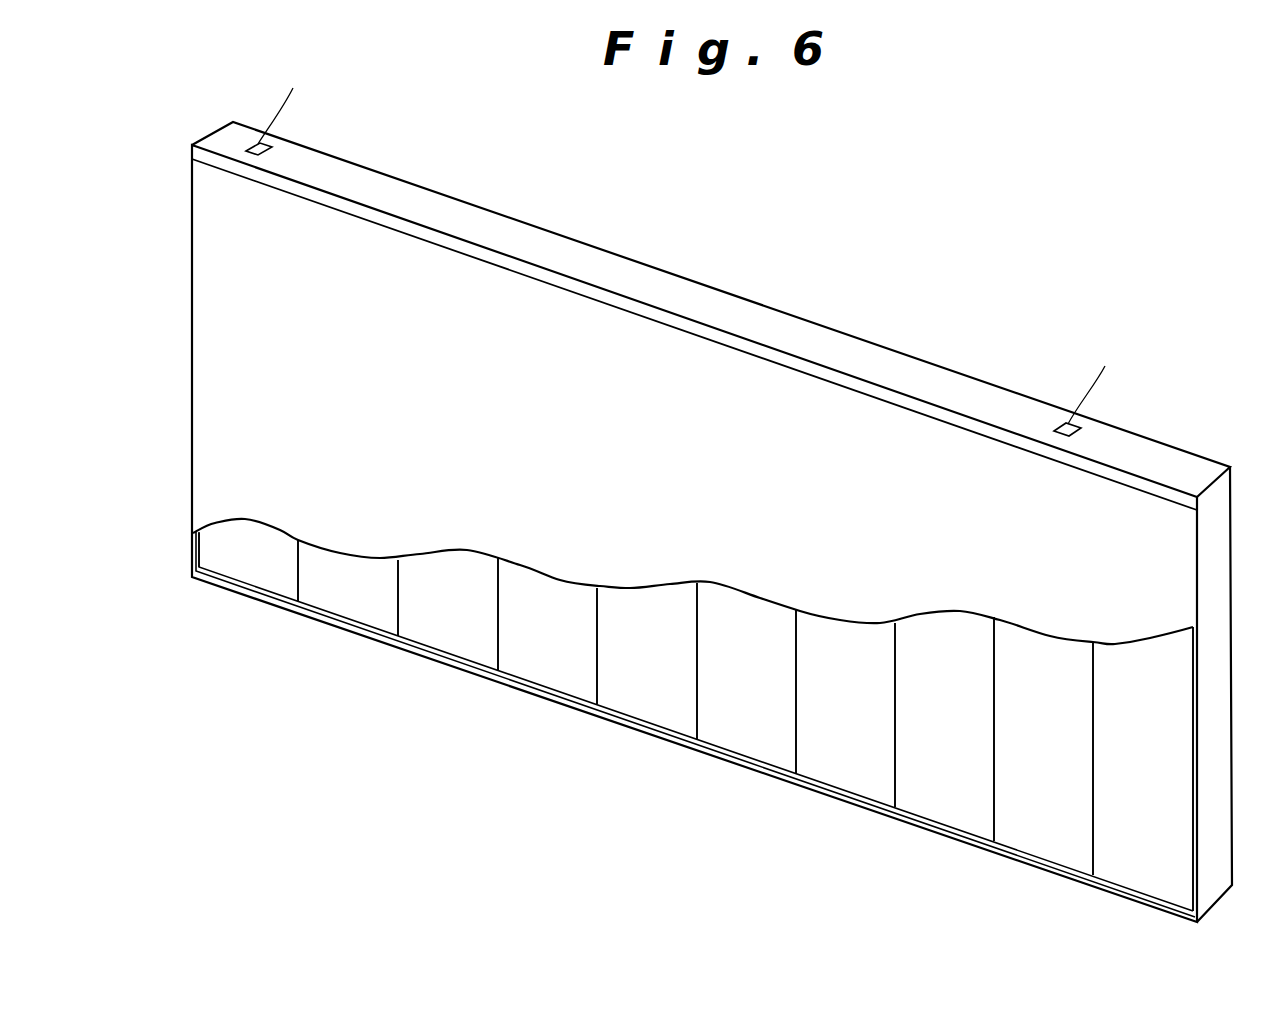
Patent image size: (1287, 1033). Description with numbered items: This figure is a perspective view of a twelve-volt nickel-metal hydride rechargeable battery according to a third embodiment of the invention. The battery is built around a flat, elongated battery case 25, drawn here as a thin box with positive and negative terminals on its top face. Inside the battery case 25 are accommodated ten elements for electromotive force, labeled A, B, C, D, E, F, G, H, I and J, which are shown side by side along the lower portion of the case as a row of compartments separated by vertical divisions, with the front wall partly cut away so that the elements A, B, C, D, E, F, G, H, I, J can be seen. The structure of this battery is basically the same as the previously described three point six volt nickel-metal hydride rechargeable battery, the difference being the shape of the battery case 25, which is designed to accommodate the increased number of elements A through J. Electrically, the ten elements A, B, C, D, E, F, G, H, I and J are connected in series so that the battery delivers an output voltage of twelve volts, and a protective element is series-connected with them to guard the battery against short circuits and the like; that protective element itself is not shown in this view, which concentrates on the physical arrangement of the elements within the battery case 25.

The battery case 25 is at (200, 394).
The element for electromotive force A is at (247, 571).
The element for electromotive force B is at (347, 602).
The element for electromotive force C is at (452, 637).
The element for electromotive force D is at (548, 672).
The element for electromotive force E is at (648, 706).
The element for electromotive force F is at (752, 740).
The element for electromotive force G is at (850, 774).
The element for electromotive force H is at (942, 807).
The element for electromotive force I is at (1043, 842).
The element for electromotive force J is at (1147, 875).